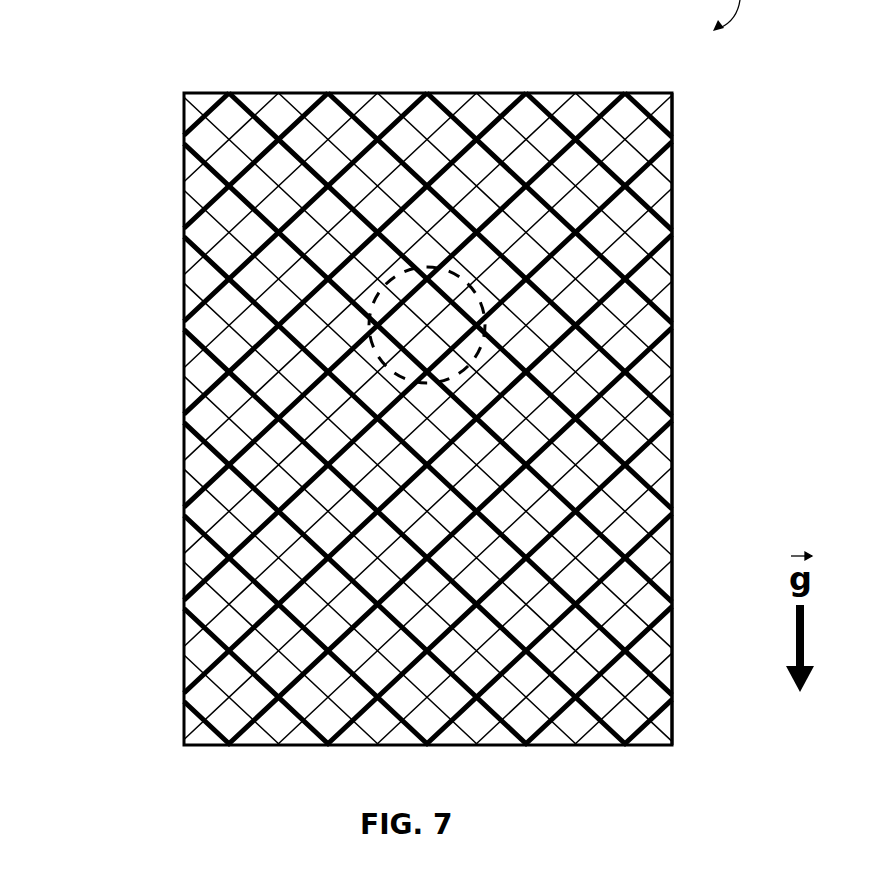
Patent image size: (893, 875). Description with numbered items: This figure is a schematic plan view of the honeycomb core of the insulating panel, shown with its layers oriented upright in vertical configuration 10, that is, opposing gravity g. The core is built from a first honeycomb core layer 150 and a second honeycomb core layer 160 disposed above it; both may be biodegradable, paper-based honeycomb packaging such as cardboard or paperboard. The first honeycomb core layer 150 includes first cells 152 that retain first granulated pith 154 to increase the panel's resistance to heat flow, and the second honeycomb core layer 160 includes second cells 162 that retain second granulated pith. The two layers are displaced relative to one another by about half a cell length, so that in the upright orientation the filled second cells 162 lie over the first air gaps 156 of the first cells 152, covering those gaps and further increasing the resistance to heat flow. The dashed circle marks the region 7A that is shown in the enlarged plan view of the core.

The vertical configuration 10 is at (93, 65).
The first honeycomb core layer 150 is at (183, 580).
The first cells 152 is at (400, 560).
The first granulated pith 154 is at (430, 452).
The first air gaps 156 is at (232, 319).
The second honeycomb core layer 160 is at (673, 583).
The second cells 162 is at (455, 530).
The enlarged plan view region 7A is at (487, 327).